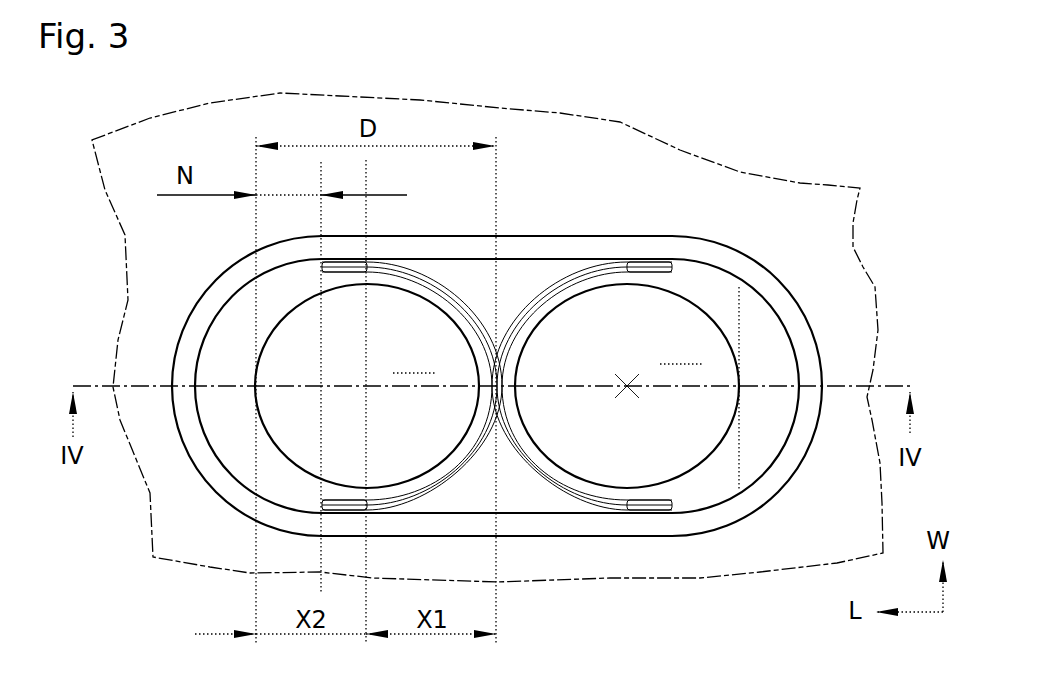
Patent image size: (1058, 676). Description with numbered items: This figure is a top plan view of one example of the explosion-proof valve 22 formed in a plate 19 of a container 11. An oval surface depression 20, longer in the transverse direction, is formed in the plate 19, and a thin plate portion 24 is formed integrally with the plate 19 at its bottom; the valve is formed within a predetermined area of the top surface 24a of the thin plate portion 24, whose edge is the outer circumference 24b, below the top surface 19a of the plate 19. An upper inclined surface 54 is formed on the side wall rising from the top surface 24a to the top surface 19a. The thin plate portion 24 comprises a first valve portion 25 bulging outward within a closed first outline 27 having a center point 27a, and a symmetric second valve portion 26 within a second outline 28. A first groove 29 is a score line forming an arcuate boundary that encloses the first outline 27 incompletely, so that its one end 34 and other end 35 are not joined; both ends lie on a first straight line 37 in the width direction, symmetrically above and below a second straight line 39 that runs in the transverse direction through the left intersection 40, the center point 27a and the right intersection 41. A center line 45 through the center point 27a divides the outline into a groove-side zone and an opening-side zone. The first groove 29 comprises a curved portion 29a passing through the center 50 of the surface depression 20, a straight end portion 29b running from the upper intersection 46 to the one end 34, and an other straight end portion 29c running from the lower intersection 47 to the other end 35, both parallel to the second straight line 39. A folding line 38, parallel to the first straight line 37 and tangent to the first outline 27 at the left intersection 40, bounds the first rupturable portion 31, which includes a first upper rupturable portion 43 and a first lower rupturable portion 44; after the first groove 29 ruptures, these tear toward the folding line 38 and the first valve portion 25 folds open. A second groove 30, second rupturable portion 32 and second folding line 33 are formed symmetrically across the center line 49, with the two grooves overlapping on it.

The container 11 is at (830, 184).
The plate 19 is at (612, 119).
The top surface of the plate 19a is at (685, 167).
The surface depression 20 is at (805, 312).
The explosion-proof valve 22 is at (591, 234).
The thin plate portion 24 is at (758, 318).
The top surface of the thin plate portion 24a is at (762, 438).
The outer circumference of the top surface 24b is at (215, 316).
The first valve portion 25 is at (415, 361).
The second valve portion 26 is at (658, 367).
The first outline 27 is at (341, 288).
The center point of the first outline 27a is at (365, 387).
The second outline 28 is at (591, 291).
The first groove 29 is at (442, 275).
The curved portion 29a is at (460, 481).
The straight end portion 29b is at (352, 255).
The other straight end portion 29c is at (350, 515).
The second groove 30 is at (541, 271).
The first rupturable portion 31 is at (290, 488).
The second rupturable portion 32 is at (709, 288).
The second folding line 33 is at (753, 482).
The one end 34 is at (282, 292).
The other end 35 is at (352, 500).
The first straight line 37 is at (320, 172).
The folding line 38 is at (255, 597).
The second straight line 39 is at (151, 383).
The left intersection 40 is at (257, 380).
The right intersection 41 is at (476, 390).
The first upper rupturable portion 43 is at (265, 252).
The first lower rupturable portion 44 is at (268, 470).
The center line 45 is at (367, 176).
The upper intersection 46 is at (383, 270).
The lower intersection 47 is at (384, 481).
The center line 49 is at (498, 614).
The center 50 is at (508, 392).
The upper inclined surface 54 is at (703, 532).